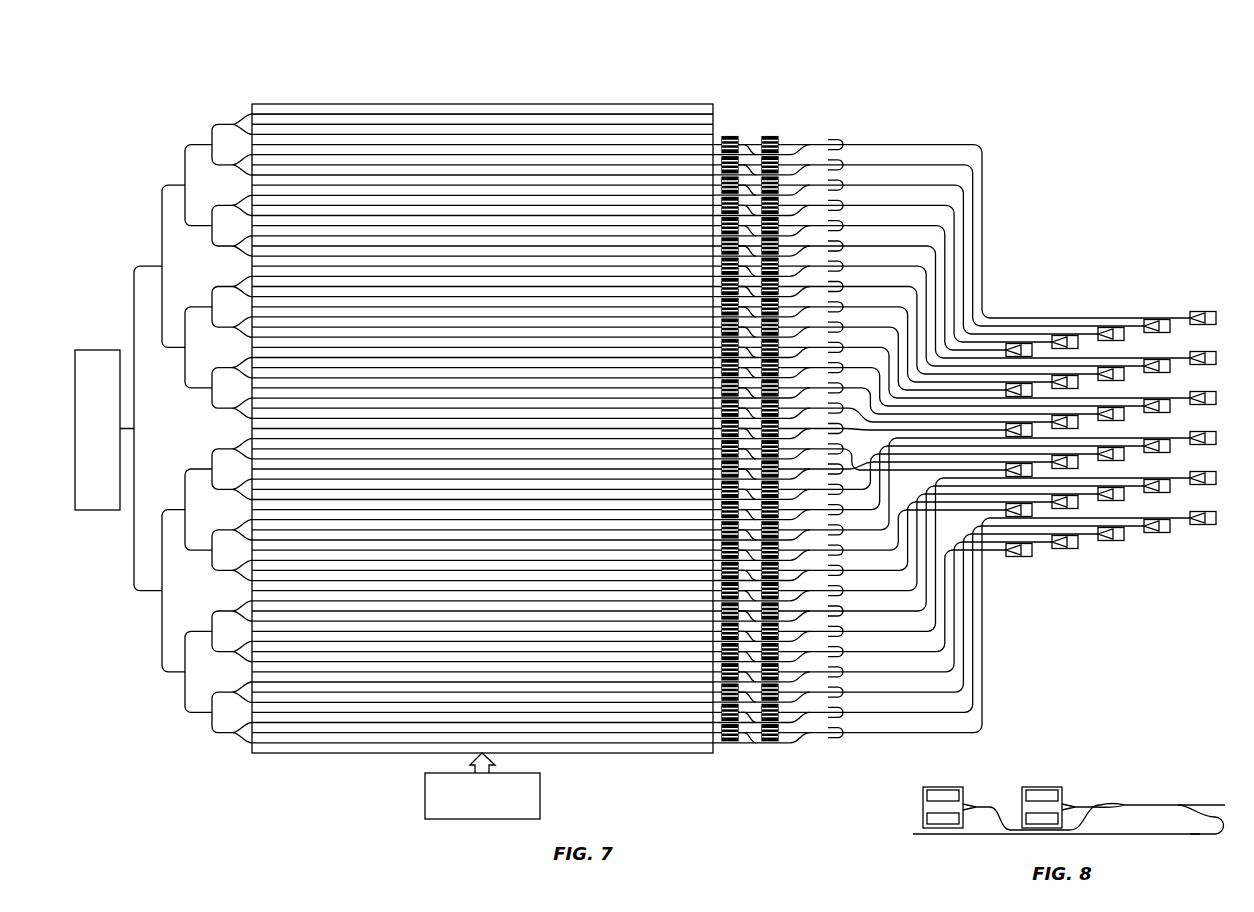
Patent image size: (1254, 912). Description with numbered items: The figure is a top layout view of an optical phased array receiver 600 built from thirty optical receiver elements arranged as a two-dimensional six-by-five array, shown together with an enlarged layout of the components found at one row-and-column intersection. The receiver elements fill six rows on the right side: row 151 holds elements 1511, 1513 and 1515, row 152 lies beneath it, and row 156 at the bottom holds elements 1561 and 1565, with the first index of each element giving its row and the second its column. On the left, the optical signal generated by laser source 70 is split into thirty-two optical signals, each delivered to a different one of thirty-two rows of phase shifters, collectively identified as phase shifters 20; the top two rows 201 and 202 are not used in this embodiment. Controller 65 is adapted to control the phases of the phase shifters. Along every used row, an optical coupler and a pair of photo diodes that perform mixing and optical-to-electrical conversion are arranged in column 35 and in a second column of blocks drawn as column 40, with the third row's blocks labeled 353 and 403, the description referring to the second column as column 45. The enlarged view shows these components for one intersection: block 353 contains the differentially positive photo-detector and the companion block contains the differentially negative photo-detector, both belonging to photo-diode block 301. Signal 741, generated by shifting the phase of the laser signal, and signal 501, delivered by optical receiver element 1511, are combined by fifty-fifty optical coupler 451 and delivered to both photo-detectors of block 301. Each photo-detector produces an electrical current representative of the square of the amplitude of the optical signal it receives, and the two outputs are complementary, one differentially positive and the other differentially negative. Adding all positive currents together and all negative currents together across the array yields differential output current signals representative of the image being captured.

In FIG. 7, the OPA receiver 600 is at (986, 98).
In FIG. 7, the phase shifters 20 is at (486, 104).
In FIG. 7, the first row of phase shifters 201 is at (256, 114).
In FIG. 7, the second row of phase shifters 202 is at (250, 124).
In FIG. 7, the laser source 70 is at (97, 350).
In FIG. 7, the controller 65 is at (541, 797).
In FIG. 7, the column 35 is at (728, 756).
In FIG. 7, the block 353 is at (730, 136).
In FIG. 7, the second modulators 40 is at (783, 415).
In FIG. 7, the third second modulator 403 is at (770, 136).
In FIG. 7, the column 45 is at (767, 756).
In FIG. 7, the first row of optical receiver elements 151 is at (1217, 316).
In FIG. 7, the optical receiver element 1511 is at (1203, 311).
In FIG. 7, the optical receiver element 1513 is at (1112, 328).
In FIG. 7, the optical receiver element 1515 is at (1021, 343).
In FIG. 7, the second row of optical receiver elements 152 is at (1217, 356).
In FIG. 7, the sixth row of optical receiver elements 156 is at (1217, 520).
In FIG. 7, the optical receiver element 1561 is at (1203, 527).
In FIG. 7, the optical receiver element 1565 is at (1021, 558).
In FIG. 8, the photo-diode block 301 is at (945, 787).
In FIG. 8, the 50/50 optical coupler 451 is at (1150, 803).
In FIG. 8, the signal 501 is at (1218, 802).
In FIG. 8, the signal 741 is at (985, 835).